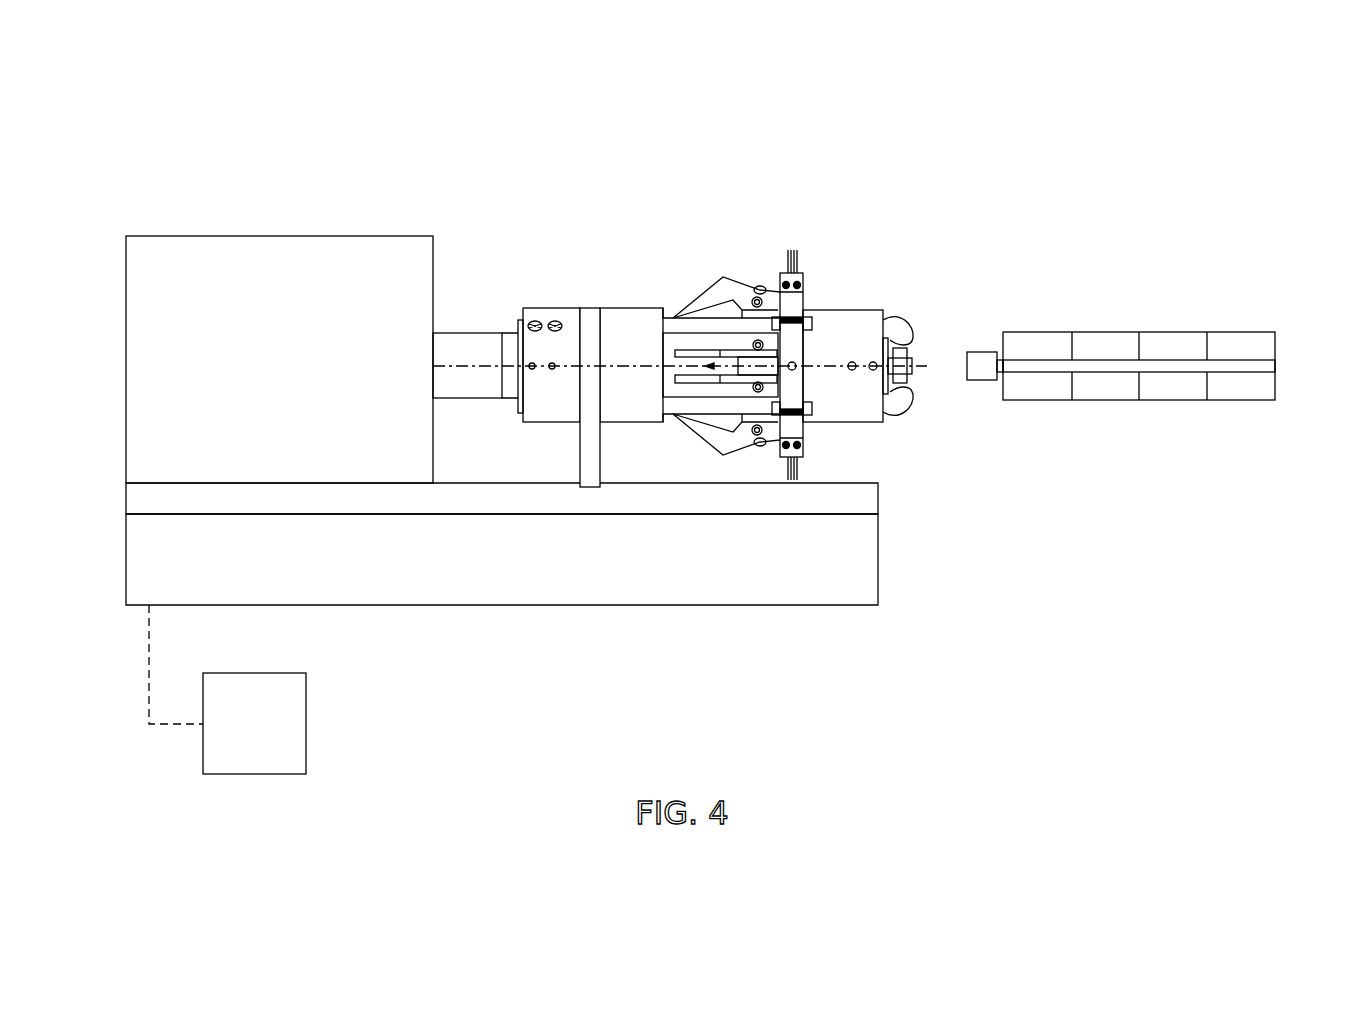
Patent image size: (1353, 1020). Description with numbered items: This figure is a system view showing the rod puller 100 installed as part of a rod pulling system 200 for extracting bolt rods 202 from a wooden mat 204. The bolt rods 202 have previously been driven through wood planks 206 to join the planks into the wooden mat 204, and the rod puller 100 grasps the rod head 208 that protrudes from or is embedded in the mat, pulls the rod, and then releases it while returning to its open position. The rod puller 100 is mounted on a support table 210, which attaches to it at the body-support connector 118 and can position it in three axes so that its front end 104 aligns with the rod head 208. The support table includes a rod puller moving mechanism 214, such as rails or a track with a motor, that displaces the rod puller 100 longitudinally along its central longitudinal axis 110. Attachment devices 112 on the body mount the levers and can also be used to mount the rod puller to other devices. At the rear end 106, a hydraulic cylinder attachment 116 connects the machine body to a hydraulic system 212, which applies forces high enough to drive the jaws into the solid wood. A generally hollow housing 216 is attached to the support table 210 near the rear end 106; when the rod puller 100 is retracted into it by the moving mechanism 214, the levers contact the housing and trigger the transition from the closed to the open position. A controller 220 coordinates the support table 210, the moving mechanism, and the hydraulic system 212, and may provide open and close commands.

The rod pulling system 200 is at (217, 115).
The housing 216 is at (258, 376).
The rod puller moving mechanism 214 is at (809, 514).
The support table 210 is at (481, 573).
The controller 220 is at (235, 738).
The hydraulic system 212 is at (469, 325).
The hydraulic cylinder attachment 116 is at (514, 355).
The rear end 106 is at (536, 290).
The body-support connector 118 is at (590, 487).
The rod head 208 is at (941, 356).
The rod puller 100 is at (697, 271).
The attachment device 112 is at (806, 452).
The front end 104 is at (863, 300).
The central longitudinal axis 110 is at (922, 356).
The wooden mat 204 is at (1121, 357).
The bolt rods 202 is at (1101, 362).
The wood planks 206 is at (1156, 407).